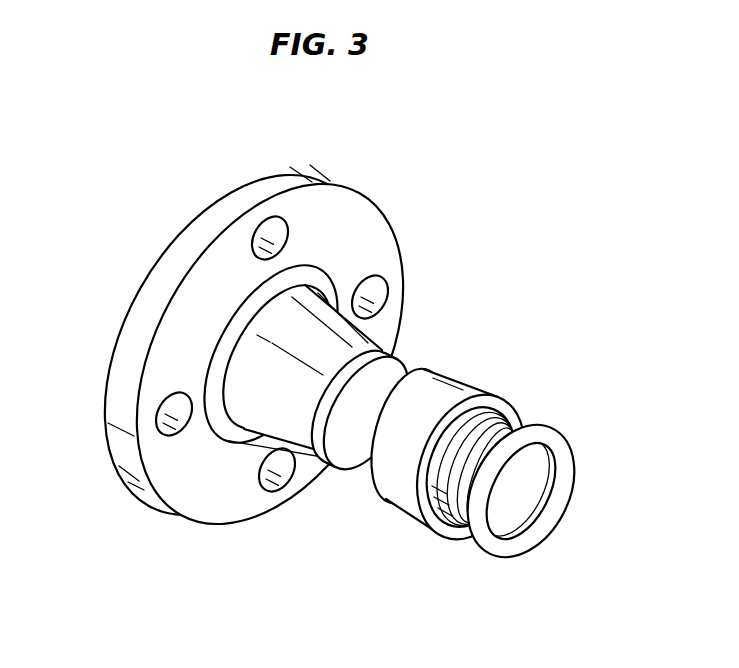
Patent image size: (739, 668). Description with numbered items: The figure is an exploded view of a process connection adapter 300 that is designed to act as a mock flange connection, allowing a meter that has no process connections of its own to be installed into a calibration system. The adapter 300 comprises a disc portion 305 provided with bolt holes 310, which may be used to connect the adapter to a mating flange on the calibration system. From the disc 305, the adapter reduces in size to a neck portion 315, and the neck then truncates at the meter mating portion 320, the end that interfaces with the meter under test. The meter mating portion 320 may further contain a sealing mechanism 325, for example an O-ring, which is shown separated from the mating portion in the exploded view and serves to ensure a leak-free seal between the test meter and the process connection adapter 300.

The process connection adapter 300 is at (355, 354).
The disc portion 305 is at (156, 272).
The bolt holes 310 is at (286, 222).
The neck portion 315 is at (282, 388).
The meter mating portion 320 is at (400, 496).
The sealing mechanism 325 is at (560, 464).